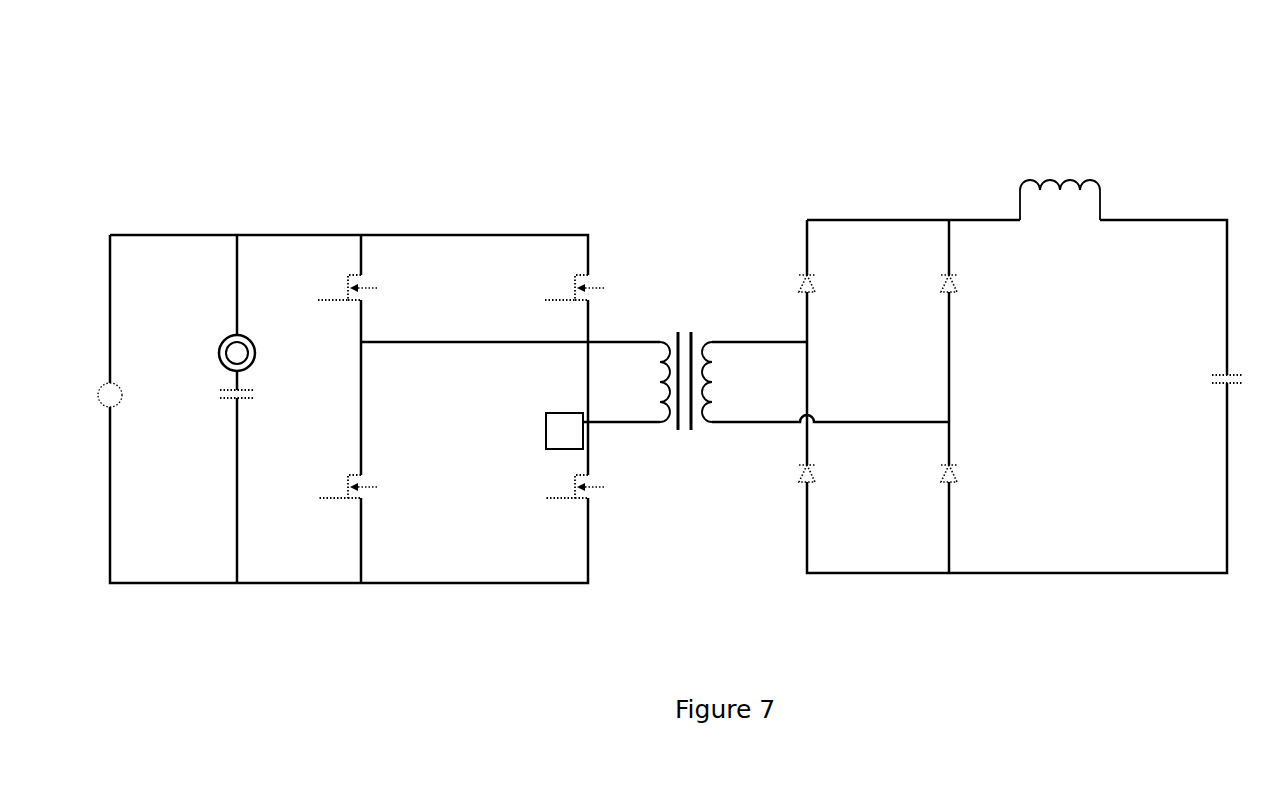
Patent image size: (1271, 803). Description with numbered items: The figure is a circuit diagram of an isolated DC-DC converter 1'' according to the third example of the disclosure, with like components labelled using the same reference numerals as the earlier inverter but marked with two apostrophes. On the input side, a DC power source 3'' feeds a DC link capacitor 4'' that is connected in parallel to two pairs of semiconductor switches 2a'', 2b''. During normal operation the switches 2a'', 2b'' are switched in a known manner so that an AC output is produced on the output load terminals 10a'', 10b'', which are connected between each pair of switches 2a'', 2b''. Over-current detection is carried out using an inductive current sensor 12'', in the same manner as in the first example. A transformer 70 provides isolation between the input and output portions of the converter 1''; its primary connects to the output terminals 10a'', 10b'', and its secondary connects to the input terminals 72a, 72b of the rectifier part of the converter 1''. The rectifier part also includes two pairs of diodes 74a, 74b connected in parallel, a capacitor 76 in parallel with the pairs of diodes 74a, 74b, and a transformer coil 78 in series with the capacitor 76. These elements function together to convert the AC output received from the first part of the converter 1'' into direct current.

The isolated DC-DC converter 1'' is at (658, 307).
The DC power source 3'' is at (85, 362).
The inductive current sensor 12'' is at (209, 329).
The DC link capacitor 4'' is at (205, 433).
The pair of semiconductor switches 2a'' is at (315, 414).
The pair of semiconductor switches 2b'' is at (541, 412).
The output load terminal 10a'' is at (510, 384).
The output load terminal 10b'' is at (603, 462).
The transformer 70 is at (676, 298).
The input terminal of rectifier part 72a is at (748, 338).
The input terminal of rectifier part 72b is at (748, 425).
The pair of diodes 74a is at (830, 278).
The pair of diodes 74b is at (973, 278).
The capacitor 76 is at (1232, 373).
The transformer coil 78 is at (1068, 180).